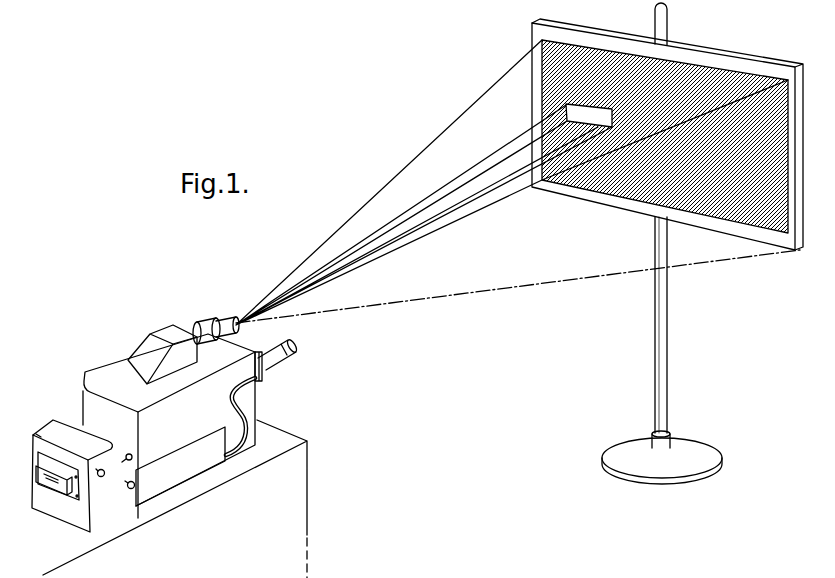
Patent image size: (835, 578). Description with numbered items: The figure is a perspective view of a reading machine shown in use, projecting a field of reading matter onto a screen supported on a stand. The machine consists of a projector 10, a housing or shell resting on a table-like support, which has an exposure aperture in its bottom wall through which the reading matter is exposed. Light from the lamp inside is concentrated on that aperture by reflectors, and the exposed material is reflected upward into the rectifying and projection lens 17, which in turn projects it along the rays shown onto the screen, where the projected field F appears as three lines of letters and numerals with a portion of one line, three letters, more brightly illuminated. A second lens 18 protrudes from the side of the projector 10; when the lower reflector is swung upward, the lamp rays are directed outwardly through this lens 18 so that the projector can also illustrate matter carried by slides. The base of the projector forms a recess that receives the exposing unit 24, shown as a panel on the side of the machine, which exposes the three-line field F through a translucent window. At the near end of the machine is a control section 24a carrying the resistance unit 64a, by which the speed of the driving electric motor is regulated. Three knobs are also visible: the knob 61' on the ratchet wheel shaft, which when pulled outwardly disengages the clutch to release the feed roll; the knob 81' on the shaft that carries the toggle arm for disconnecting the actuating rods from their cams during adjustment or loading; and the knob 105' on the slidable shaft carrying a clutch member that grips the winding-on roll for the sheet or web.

The projector 10 is at (113, 360).
The rectifying and projection lens 17 is at (219, 321).
The lens 18 is at (282, 355).
The exposing unit 24 is at (186, 470).
The control housing 24a is at (73, 428).
The resistance unit 64a is at (58, 494).
The knob 61' is at (112, 521).
The knob 81' is at (148, 517).
The knob 105' is at (150, 443).
The field F is at (685, 72).